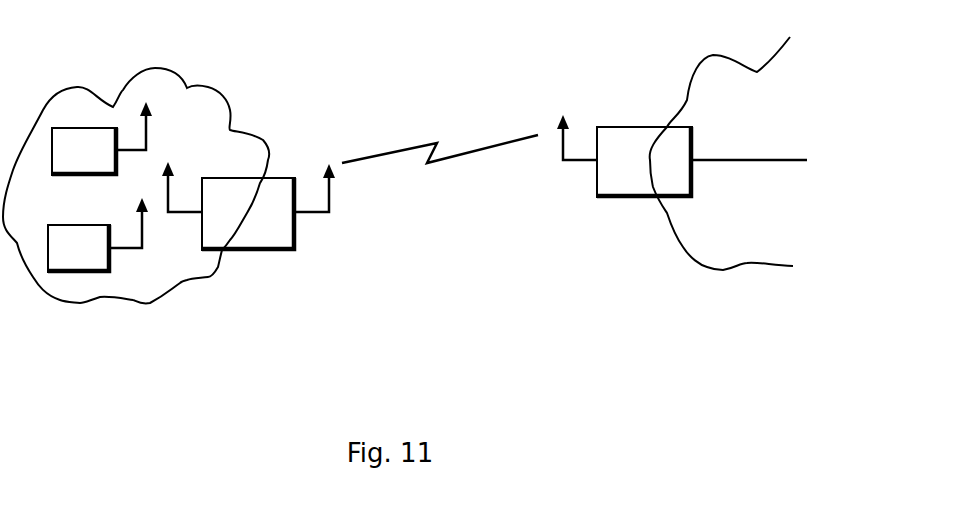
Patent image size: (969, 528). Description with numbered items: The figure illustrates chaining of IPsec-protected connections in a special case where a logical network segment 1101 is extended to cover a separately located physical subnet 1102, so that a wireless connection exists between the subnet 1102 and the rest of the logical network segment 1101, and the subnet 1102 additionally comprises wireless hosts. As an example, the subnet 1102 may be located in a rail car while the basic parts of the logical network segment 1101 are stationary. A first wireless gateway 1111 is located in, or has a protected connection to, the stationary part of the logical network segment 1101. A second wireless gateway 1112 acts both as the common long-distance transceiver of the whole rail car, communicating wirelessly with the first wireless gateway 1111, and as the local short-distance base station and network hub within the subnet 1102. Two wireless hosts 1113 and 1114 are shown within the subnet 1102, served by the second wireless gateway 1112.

The logical network segment 1101 is at (723, 270).
The physical subnet 1102 is at (200, 283).
The first wireless gateway 1111 is at (612, 197).
The second wireless gateway 1112 is at (275, 250).
The wireless host 1113 is at (70, 272).
The wireless host 1114 is at (73, 128).